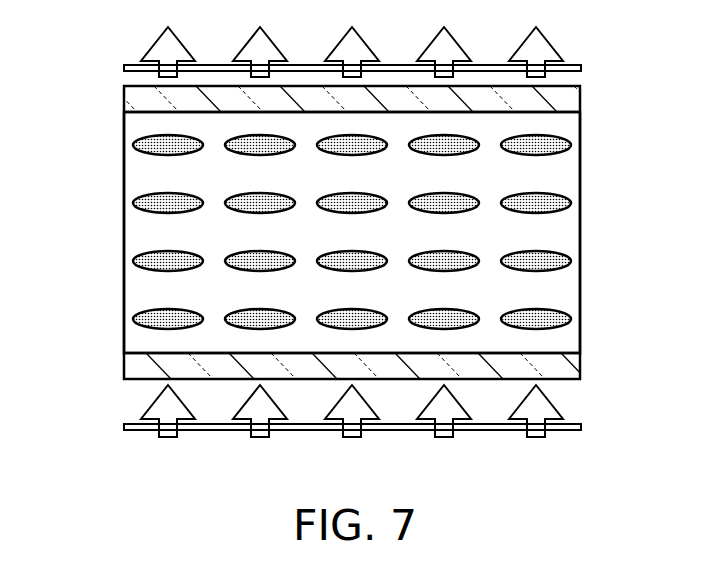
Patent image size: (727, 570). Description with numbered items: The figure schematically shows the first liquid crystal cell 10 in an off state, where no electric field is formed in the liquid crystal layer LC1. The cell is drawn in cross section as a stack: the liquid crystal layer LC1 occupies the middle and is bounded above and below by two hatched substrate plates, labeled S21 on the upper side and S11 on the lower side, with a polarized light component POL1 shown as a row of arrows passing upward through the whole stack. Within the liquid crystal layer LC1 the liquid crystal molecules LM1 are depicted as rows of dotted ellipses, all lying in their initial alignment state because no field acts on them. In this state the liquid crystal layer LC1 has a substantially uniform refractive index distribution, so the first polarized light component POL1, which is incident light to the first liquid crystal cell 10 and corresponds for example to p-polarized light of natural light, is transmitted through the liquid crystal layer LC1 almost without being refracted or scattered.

The first liquid crystal cell 10 is at (600, 118).
The first polarized light component POL1 is at (215, 64).
The second substrate S21 is at (118, 83).
The first substrate S11 is at (118, 386).
The liquid crystal layer LC1 is at (140, 231).
The liquid crystal molecules LM1 is at (145, 268).